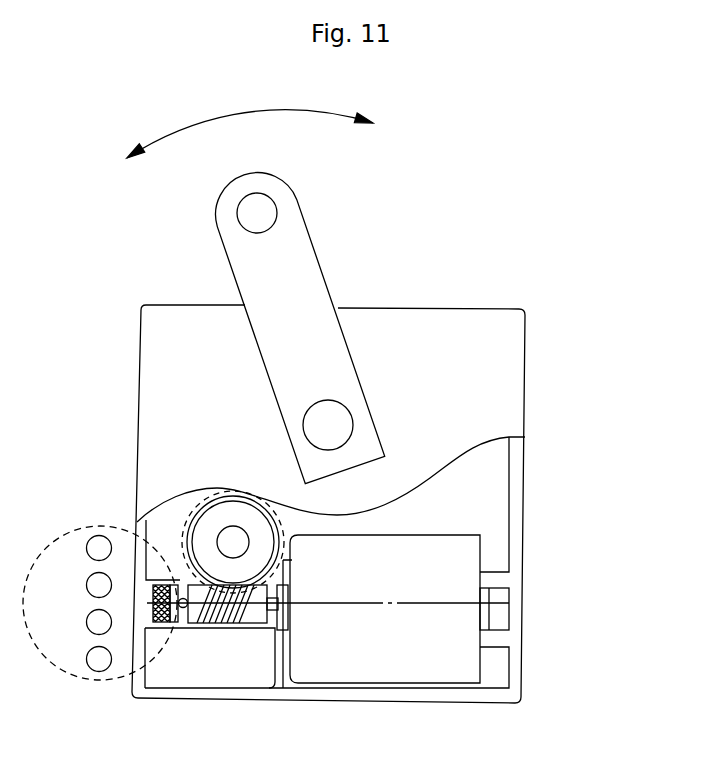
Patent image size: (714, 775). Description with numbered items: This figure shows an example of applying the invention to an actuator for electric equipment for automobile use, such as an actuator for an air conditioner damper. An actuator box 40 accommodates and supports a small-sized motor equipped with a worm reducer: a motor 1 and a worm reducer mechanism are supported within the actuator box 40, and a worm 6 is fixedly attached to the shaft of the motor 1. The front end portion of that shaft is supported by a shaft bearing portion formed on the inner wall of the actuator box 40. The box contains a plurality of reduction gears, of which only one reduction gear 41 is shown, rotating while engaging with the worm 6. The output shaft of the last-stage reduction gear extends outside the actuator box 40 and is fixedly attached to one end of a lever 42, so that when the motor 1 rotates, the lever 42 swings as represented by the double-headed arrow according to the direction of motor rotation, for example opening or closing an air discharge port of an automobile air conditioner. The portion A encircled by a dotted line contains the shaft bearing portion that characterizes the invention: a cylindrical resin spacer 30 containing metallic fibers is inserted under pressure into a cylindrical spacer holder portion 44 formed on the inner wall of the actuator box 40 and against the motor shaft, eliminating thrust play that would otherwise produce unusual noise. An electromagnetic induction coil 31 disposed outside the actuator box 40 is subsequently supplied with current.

The motor 1 is at (418, 677).
The worm 6 is at (252, 623).
The resin spacer 30 is at (162, 622).
The electromagnetic induction coil 31 is at (90, 662).
The actuator box 40 is at (507, 368).
The reduction gear 41 is at (213, 517).
The lever 42 is at (317, 270).
The spacer holder portion 44 is at (165, 581).
The portion A is at (188, 662).